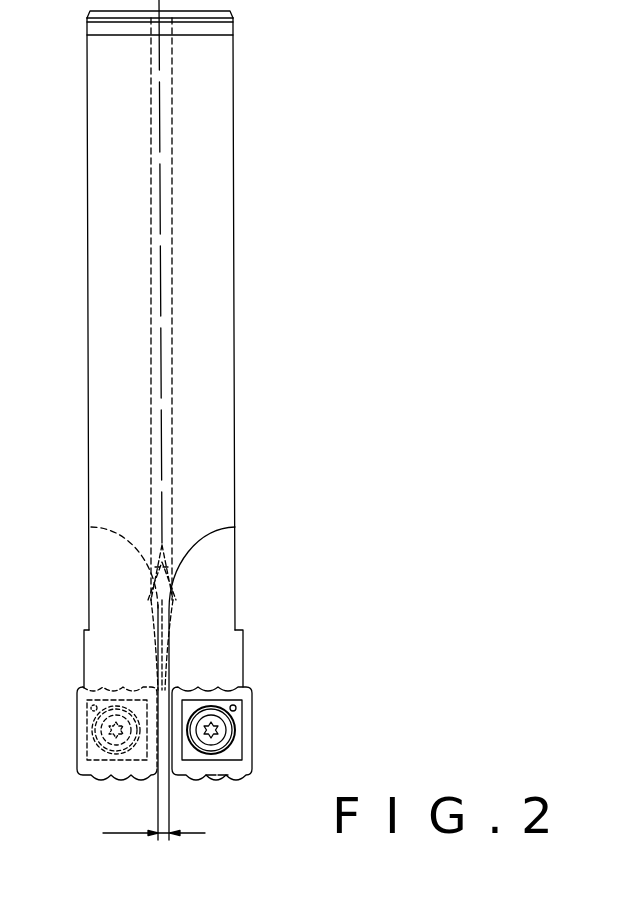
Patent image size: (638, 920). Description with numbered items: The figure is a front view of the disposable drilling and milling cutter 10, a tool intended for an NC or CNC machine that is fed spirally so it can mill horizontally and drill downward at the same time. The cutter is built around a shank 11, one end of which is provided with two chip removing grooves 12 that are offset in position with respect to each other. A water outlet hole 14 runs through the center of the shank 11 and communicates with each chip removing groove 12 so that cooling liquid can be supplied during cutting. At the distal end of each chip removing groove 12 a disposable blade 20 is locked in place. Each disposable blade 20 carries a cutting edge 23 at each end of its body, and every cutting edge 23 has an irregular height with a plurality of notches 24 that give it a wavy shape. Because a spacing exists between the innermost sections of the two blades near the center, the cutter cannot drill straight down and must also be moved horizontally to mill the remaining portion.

The disposable drilling and milling cutter 10 is at (231, 456).
The shank 11 is at (113, 343).
The chip removing groove 12 is at (207, 607).
The water outlet hole 14 is at (157, 540).
The disposable blade 20 is at (250, 735).
The cutting edge 23 is at (222, 773).
The notch 24 is at (213, 773).